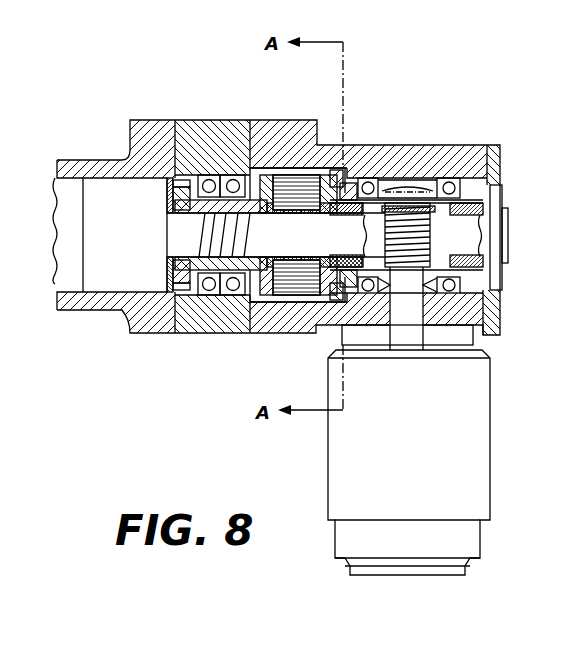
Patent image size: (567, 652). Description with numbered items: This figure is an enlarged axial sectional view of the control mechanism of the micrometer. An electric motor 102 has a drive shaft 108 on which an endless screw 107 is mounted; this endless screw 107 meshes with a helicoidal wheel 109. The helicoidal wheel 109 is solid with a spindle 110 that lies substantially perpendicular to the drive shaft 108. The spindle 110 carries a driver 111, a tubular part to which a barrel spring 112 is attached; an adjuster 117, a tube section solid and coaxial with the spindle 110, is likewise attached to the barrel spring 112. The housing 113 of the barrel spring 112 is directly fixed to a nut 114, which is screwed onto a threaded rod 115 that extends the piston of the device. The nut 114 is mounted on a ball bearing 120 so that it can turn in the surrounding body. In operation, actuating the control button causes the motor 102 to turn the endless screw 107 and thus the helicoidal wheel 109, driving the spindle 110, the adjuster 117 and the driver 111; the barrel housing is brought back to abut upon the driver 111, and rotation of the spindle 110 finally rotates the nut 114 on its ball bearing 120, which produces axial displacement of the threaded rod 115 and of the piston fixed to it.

The electric motor 102 is at (340, 458).
The endless screw 107 is at (432, 228).
The drive shaft 108 is at (407, 311).
The helicoidal wheel 109 is at (405, 188).
The spindle 110 is at (503, 204).
The driver 111 is at (357, 178).
The barrel spring 112 is at (282, 172).
The housing 113 is at (303, 172).
The nut 114 is at (187, 214).
The threaded rod 115 is at (213, 332).
The adjuster 117 is at (350, 213).
The ball bearing 120 is at (238, 176).